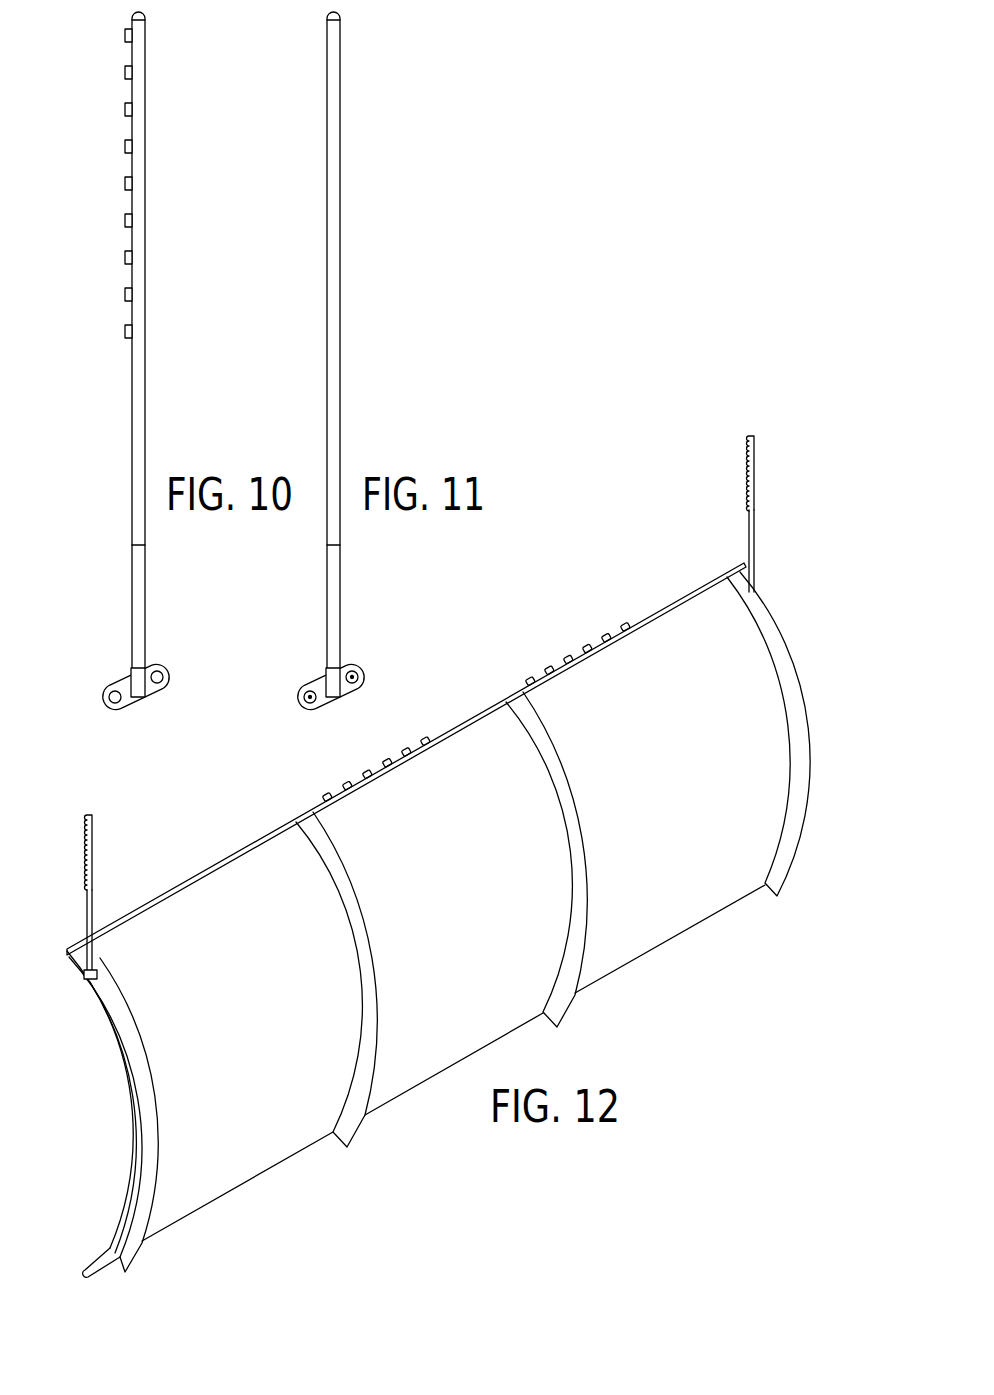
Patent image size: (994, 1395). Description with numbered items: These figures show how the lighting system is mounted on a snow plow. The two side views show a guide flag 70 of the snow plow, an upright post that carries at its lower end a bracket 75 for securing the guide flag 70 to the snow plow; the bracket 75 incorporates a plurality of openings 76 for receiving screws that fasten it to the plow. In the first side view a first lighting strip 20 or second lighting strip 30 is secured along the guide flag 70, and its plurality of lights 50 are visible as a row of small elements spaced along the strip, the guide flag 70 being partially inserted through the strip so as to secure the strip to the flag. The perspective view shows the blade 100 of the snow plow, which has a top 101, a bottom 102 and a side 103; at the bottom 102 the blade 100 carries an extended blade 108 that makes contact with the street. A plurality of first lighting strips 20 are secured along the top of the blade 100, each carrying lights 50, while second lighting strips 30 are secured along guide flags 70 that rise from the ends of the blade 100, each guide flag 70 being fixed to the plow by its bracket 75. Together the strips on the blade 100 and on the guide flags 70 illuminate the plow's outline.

In FIG. 10, the first lighting strip 20 is at (139, 302).
In FIG. 12, the first lighting strip 20 is at (573, 658).
In FIG. 10, the second lighting strip 30 is at (138, 278).
In FIG. 11, the second lighting strip 30 is at (333, 278).
In FIG. 12, the second lighting strip 30 is at (87, 850).
In FIG. 10, the lights 50 is at (124, 36).
In FIG. 10, the guide flag 70 is at (139, 603).
In FIG. 11, the guide flag 70 is at (301, 606).
In FIG. 12, the guide flag 70 is at (87, 926).
In FIG. 10, the bracket 75 is at (123, 686).
In FIG. 11, the bracket 75 is at (313, 679).
In FIG. 12, the bracket 75 is at (88, 987).
In FIG. 11, the openings 76 is at (321, 670).
In FIG. 12, the blade 100 is at (750, 703).
In FIG. 12, the top 101 is at (468, 727).
In FIG. 12, the bottom 102 is at (703, 925).
In FIG. 12, the side 103 is at (117, 1065).
In FIG. 12, the extended blade 108 is at (97, 1263).